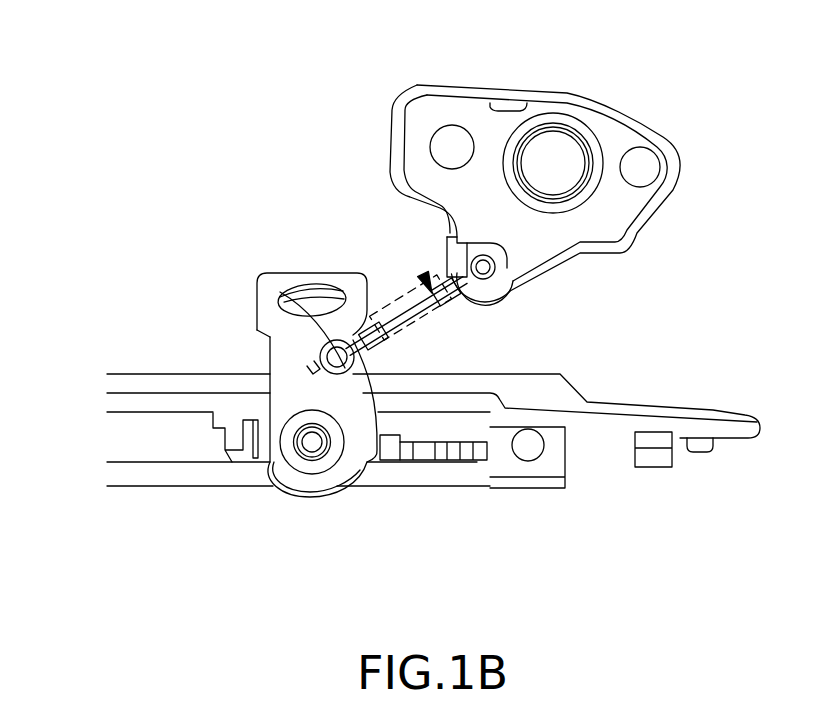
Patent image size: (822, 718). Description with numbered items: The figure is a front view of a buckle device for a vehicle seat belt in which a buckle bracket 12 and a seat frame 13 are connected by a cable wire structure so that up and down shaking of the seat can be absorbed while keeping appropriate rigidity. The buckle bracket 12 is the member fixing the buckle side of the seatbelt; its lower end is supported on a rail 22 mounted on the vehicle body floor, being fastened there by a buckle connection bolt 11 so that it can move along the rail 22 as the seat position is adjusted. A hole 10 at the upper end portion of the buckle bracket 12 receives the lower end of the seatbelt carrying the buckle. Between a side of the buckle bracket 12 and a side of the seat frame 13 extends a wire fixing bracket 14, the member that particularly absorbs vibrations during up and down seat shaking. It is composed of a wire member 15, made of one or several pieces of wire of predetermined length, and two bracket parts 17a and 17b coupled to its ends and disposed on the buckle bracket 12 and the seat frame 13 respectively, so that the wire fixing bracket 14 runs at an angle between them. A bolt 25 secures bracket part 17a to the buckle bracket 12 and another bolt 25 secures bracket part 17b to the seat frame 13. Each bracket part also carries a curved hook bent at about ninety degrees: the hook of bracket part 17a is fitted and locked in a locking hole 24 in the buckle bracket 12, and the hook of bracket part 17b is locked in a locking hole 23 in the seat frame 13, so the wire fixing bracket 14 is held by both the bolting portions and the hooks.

The hole 10 is at (262, 292).
The buckle connection bolt 11 is at (311, 443).
The buckle bracket 12 is at (268, 353).
The seat frame 13 is at (623, 213).
The wire fixing bracket 14 is at (423, 272).
The wire member 15 is at (408, 276).
The bracket part 17a is at (280, 290).
The bracket part 17b is at (518, 280).
The rail 22 is at (120, 448).
The locking hole 23 is at (409, 128).
The locking hole 24 is at (283, 475).
The bolt 25 is at (488, 256).